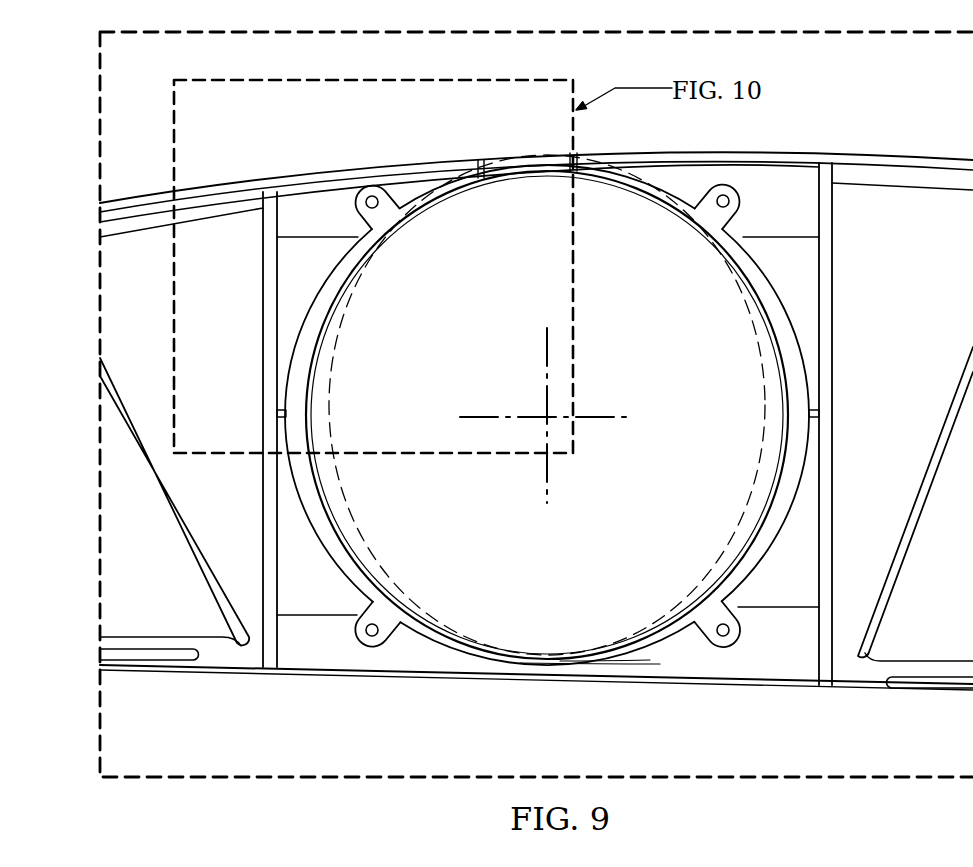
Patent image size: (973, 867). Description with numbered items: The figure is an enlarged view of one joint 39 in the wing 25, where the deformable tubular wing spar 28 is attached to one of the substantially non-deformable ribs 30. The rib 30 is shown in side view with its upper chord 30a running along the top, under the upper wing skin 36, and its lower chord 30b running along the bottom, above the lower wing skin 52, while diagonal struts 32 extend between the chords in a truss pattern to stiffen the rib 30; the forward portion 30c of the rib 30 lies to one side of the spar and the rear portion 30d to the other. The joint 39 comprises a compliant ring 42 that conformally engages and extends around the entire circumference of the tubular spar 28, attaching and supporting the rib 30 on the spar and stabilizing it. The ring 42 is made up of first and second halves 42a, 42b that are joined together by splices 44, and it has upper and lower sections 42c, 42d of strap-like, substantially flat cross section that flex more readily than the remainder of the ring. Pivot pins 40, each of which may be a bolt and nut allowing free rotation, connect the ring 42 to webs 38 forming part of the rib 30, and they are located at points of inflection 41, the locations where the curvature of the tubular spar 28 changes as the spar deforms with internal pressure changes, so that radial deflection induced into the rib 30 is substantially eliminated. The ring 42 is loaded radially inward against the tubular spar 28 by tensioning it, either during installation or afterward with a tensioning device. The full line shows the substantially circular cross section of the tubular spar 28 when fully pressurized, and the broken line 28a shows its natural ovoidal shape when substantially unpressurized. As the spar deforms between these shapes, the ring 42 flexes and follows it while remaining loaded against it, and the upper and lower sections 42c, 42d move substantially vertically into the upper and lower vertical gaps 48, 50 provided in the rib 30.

The wing 25 is at (152, 100).
The tubular wing spar 28 is at (333, 485).
The ovoidal cross sectional shape of the tubular spar 28a is at (335, 385).
The rib 30 is at (768, 158).
The upper chord 30a is at (280, 177).
The lower chord 30b is at (233, 665).
The forward portion of the rib 30c is at (150, 180).
The rear portion of the rib 30d is at (899, 147).
The strut 32 is at (203, 585).
The upper wing skin 36 is at (722, 153).
The web 38 is at (392, 166).
The joint 39 is at (660, 656).
The pivot pin 40 is at (368, 195).
The point of inflection 41 is at (356, 203).
The ring 42 is at (549, 380).
The first half of the ring 42a is at (305, 315).
The second half of the ring 42b is at (790, 495).
The upper section of the ring 42c is at (535, 168).
The lower section of the ring 42d is at (540, 660).
The splice 44 is at (285, 411).
The upper vertical gap 48 is at (664, 190).
The lower vertical gap 50 is at (597, 661).
The lower wing skin 52 is at (520, 680).